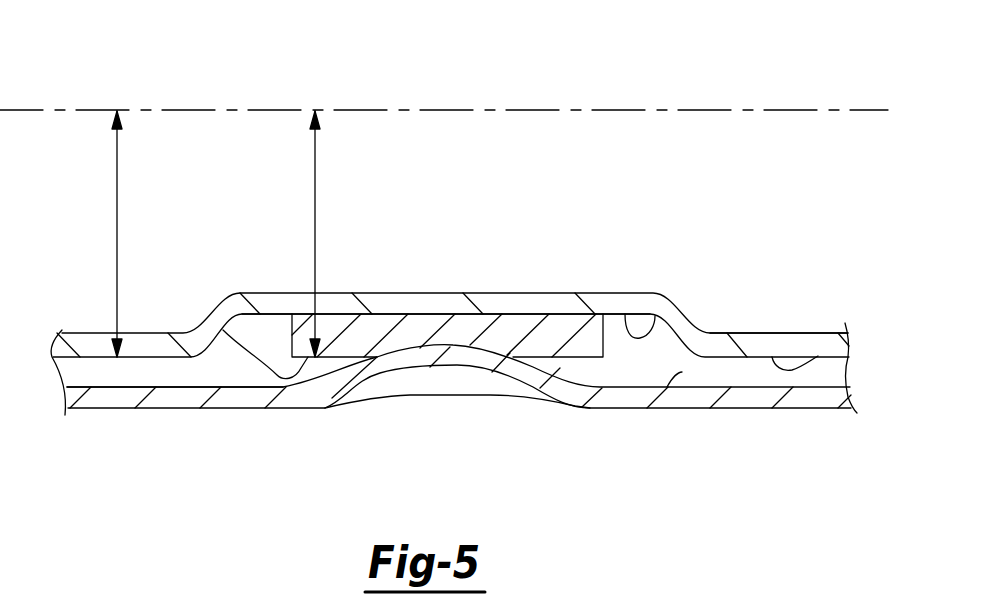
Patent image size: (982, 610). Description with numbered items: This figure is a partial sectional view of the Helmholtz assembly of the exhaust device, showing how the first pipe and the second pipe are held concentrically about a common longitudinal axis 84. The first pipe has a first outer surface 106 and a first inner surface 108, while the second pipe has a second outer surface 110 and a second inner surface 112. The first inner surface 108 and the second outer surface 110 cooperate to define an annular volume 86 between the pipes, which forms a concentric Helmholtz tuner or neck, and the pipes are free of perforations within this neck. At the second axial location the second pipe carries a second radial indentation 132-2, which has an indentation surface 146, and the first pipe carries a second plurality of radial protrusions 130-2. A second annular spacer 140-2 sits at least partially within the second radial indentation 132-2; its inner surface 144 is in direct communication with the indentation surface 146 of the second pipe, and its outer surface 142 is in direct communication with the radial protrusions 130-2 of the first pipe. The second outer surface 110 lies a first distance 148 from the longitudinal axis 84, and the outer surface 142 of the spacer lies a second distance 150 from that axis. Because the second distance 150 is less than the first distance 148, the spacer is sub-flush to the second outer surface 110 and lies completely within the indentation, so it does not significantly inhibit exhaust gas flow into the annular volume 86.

The longitudinal axis 84 is at (610, 110).
The annular volume 86 is at (203, 368).
The first outer surface 106 is at (690, 408).
The first inner surface 108 is at (682, 372).
The second outer surface 110 is at (818, 356).
The second inner surface 112 is at (802, 333).
The second plurality of radial protrusions 130-2 is at (448, 360).
The second radial indentation 132-2 is at (408, 300).
The second annular spacer 140-2 is at (375, 320).
The outer surface 142 is at (223, 330).
The inner surface 144 is at (490, 314).
The indentation surface 146 is at (647, 338).
The first distance 148 is at (117, 223).
The second distance 150 is at (315, 203).